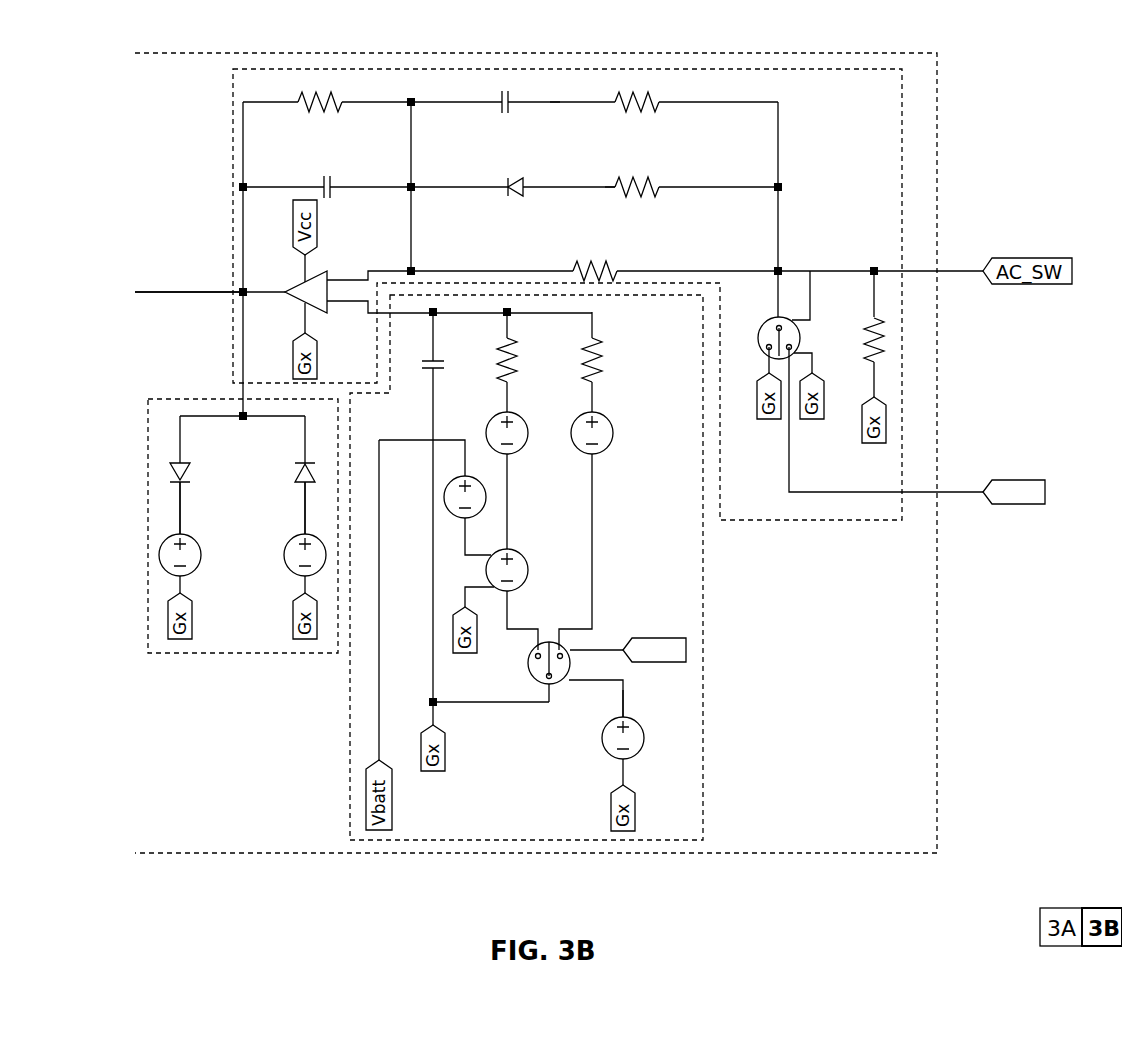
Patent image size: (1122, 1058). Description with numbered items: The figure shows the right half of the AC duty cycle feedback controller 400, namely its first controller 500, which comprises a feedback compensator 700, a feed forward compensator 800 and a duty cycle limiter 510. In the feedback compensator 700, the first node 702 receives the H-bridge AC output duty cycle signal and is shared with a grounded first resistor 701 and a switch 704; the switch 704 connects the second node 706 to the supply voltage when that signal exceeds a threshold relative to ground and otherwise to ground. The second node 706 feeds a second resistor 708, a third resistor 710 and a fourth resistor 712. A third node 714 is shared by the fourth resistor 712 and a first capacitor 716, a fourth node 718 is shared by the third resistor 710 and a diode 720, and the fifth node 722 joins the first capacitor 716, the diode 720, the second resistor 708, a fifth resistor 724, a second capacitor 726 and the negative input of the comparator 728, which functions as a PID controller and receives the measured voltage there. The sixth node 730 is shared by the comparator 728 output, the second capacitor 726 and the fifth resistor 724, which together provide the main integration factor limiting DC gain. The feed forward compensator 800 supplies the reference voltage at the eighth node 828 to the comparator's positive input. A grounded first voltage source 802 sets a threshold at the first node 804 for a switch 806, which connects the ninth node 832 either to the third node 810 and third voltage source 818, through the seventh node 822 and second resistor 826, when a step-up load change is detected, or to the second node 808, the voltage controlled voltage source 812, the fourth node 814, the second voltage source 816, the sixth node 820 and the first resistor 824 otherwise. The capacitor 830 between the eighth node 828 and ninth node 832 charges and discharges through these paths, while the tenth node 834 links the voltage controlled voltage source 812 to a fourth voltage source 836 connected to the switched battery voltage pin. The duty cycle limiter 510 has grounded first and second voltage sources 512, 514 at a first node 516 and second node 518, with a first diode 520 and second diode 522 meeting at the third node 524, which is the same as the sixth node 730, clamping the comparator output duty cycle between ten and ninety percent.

The AC duty cycle feedback controller 400 is at (880, 876).
The first controller 500 is at (725, 855).
The duty cycle limiter 510 is at (180, 398).
The first voltage source 512 is at (158, 557).
The second voltage source 514 is at (284, 565).
The first node 516 is at (172, 520).
The second node 518 is at (300, 528).
The first diode 520 is at (190, 472).
The second diode 522 is at (294, 472).
The third node 524 is at (283, 420).
The feedback compensator 700 is at (903, 118).
The first resistor 701 is at (890, 352).
The first node 702 is at (875, 268).
The switch 704 is at (759, 330).
The second node 706 is at (782, 268).
The second resistor 708 is at (583, 264).
The third resistor 710 is at (655, 190).
The fourth resistor 712 is at (655, 104).
The third node 714 is at (553, 103).
The first capacitor 716 is at (500, 114).
The fourth node 718 is at (600, 186).
The diode 720 is at (513, 198).
The fifth node 722 is at (414, 186).
The fifth resistor 724 is at (316, 112).
The second capacitor 726 is at (327, 173).
The comparator 728 is at (318, 275).
The sixth node 730 is at (242, 290).
The feed forward compensator 800 is at (706, 575).
The first voltage source 802 is at (603, 740).
The first node 804 is at (626, 718).
The switch 806 is at (528, 668).
The second node 808 is at (532, 630).
The third node 810 is at (594, 545).
The voltage controlled voltage source 812 is at (528, 572).
The fourth node 814 is at (510, 507).
The second voltage source 816 is at (526, 438).
The third voltage source 818 is at (612, 440).
The sixth node 820 is at (512, 380).
The seventh node 822 is at (600, 400).
The first resistor 824 is at (502, 362).
The second resistor 826 is at (597, 355).
The eighth node 828 is at (500, 316).
The capacitor 830 is at (427, 365).
The ninth node 832 is at (460, 705).
The tenth node 834 is at (462, 548).
The fourth voltage source 836 is at (443, 503).